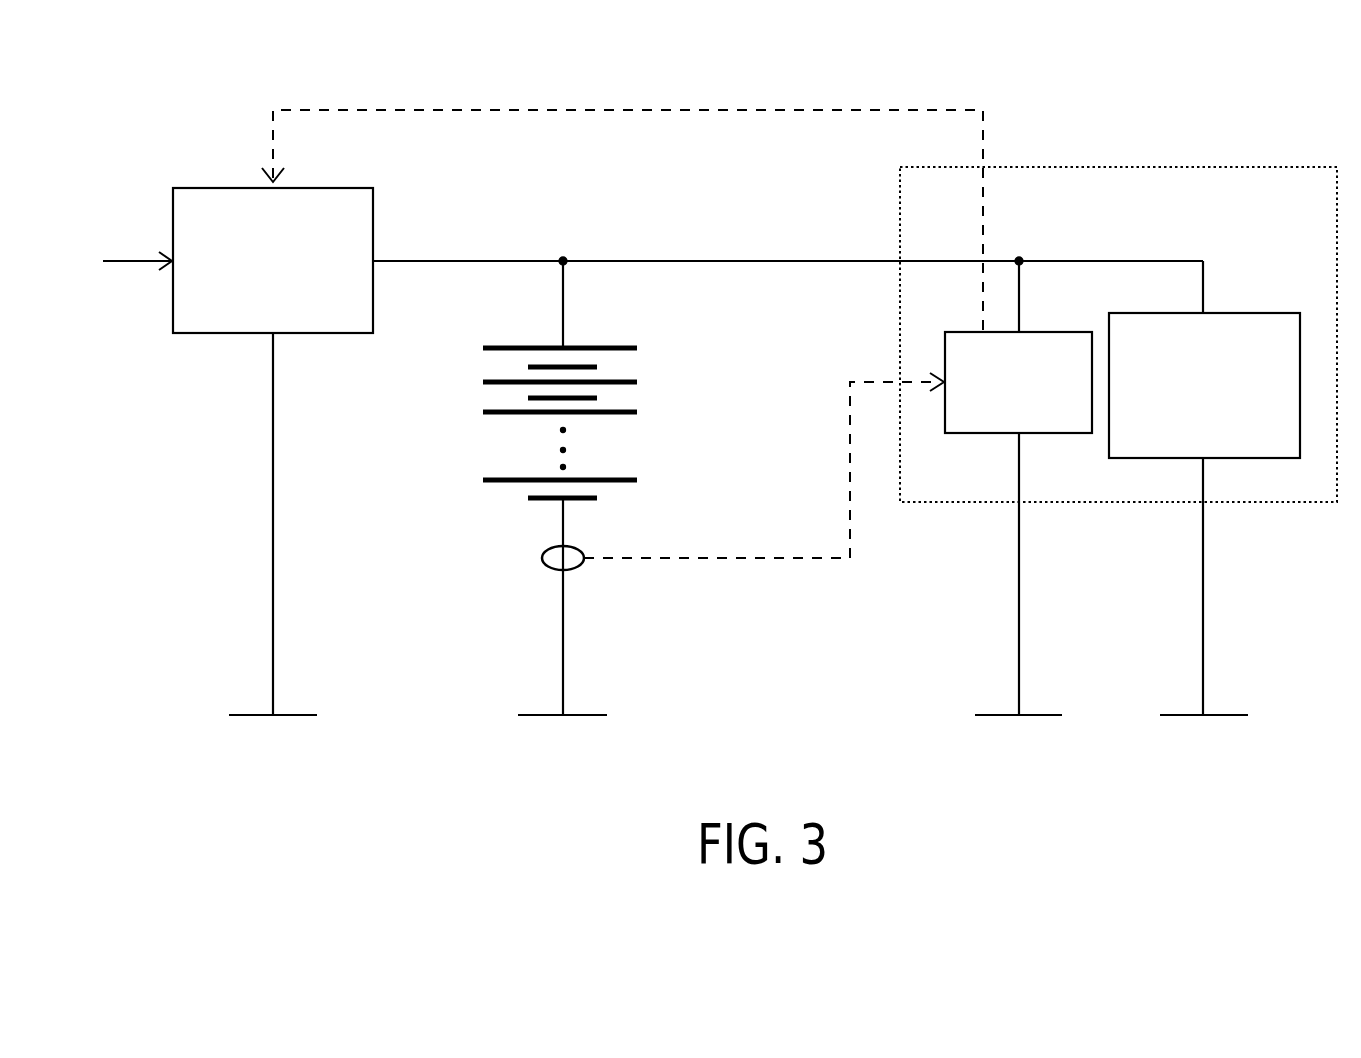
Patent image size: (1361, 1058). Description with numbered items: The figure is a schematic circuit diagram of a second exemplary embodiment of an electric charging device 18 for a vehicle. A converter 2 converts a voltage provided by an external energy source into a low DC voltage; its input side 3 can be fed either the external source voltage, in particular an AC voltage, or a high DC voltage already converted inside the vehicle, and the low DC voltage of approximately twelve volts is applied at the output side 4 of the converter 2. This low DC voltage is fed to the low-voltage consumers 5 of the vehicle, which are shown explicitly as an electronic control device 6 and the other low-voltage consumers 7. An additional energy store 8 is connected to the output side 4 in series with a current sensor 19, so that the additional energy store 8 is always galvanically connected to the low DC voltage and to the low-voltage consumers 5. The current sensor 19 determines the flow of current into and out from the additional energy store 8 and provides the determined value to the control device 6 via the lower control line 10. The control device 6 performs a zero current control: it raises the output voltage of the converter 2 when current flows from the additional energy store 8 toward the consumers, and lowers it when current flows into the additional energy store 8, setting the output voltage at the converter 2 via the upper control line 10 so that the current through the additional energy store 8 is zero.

The converter 2 is at (262, 277).
The input side 3 is at (137, 239).
The output side 4 is at (788, 278).
The low-voltage consumers 5 is at (1097, 218).
The electronic control device 6 is at (1007, 400).
The other low-voltage consumers 7 is at (1193, 400).
The additional energy store 8 is at (480, 408).
The control line 10 is at (660, 110).
The electric charging device 18 is at (238, 775).
The current sensor 19 is at (545, 567).